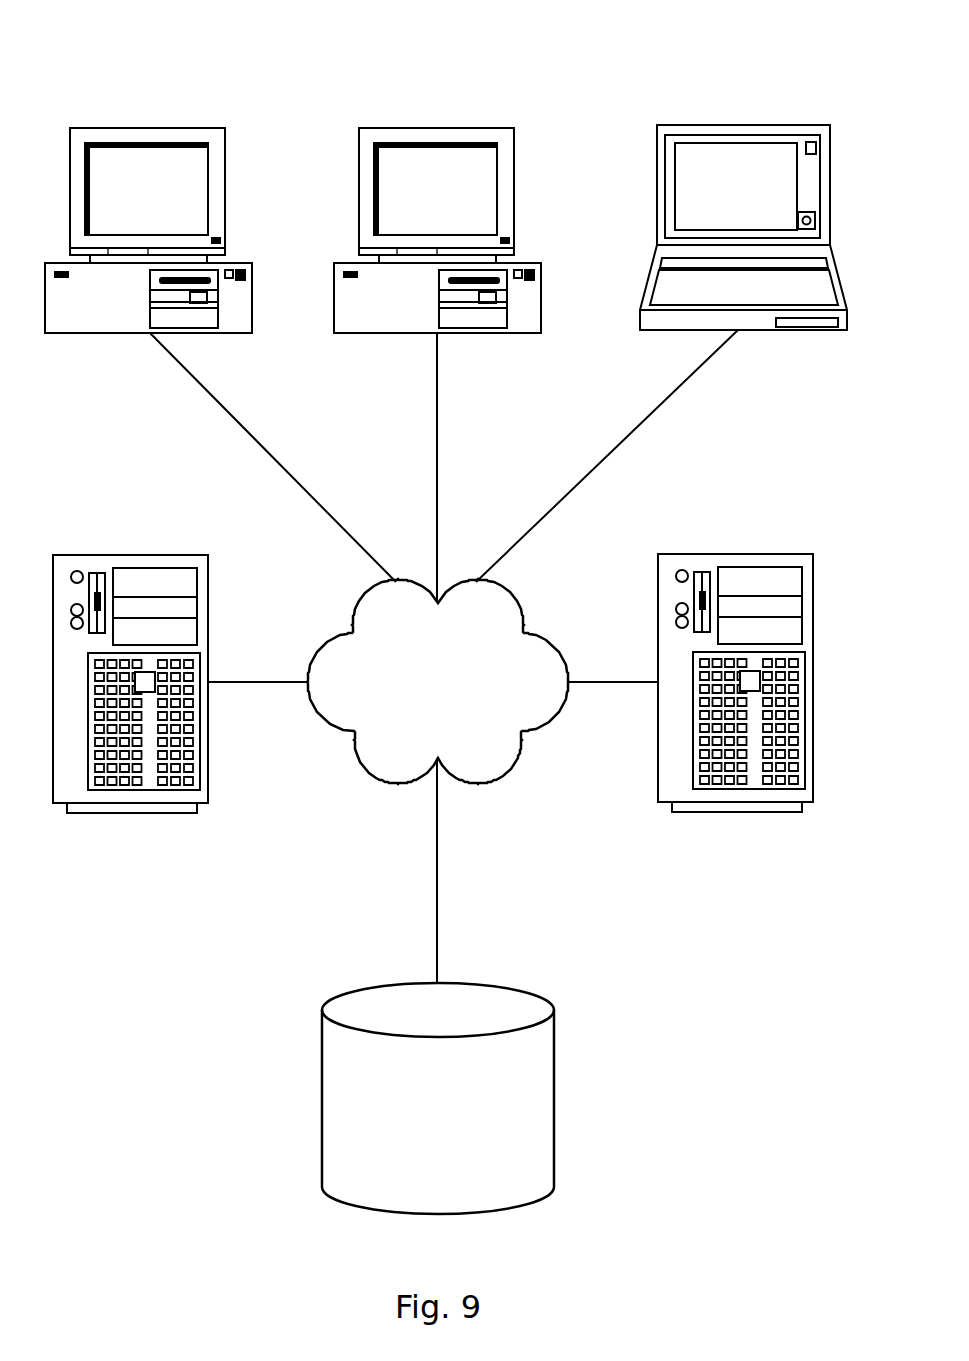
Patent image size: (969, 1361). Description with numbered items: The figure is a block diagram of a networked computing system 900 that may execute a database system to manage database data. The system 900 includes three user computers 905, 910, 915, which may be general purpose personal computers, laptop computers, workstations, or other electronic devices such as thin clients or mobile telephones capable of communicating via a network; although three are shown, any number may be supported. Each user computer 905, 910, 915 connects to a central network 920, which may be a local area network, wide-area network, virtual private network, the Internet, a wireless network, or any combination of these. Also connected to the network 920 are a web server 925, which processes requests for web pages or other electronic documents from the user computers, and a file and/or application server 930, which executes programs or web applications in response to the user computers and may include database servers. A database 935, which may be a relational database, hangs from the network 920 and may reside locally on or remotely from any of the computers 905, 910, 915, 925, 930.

The system 900 is at (266, 52).
The user computer 905 is at (252, 333).
The user computer 910 is at (541, 333).
The user computer 915 is at (780, 330).
The network 920 is at (498, 778).
The web server 925 is at (208, 770).
The file and/or application server 930 is at (813, 768).
The database 935 is at (554, 1090).